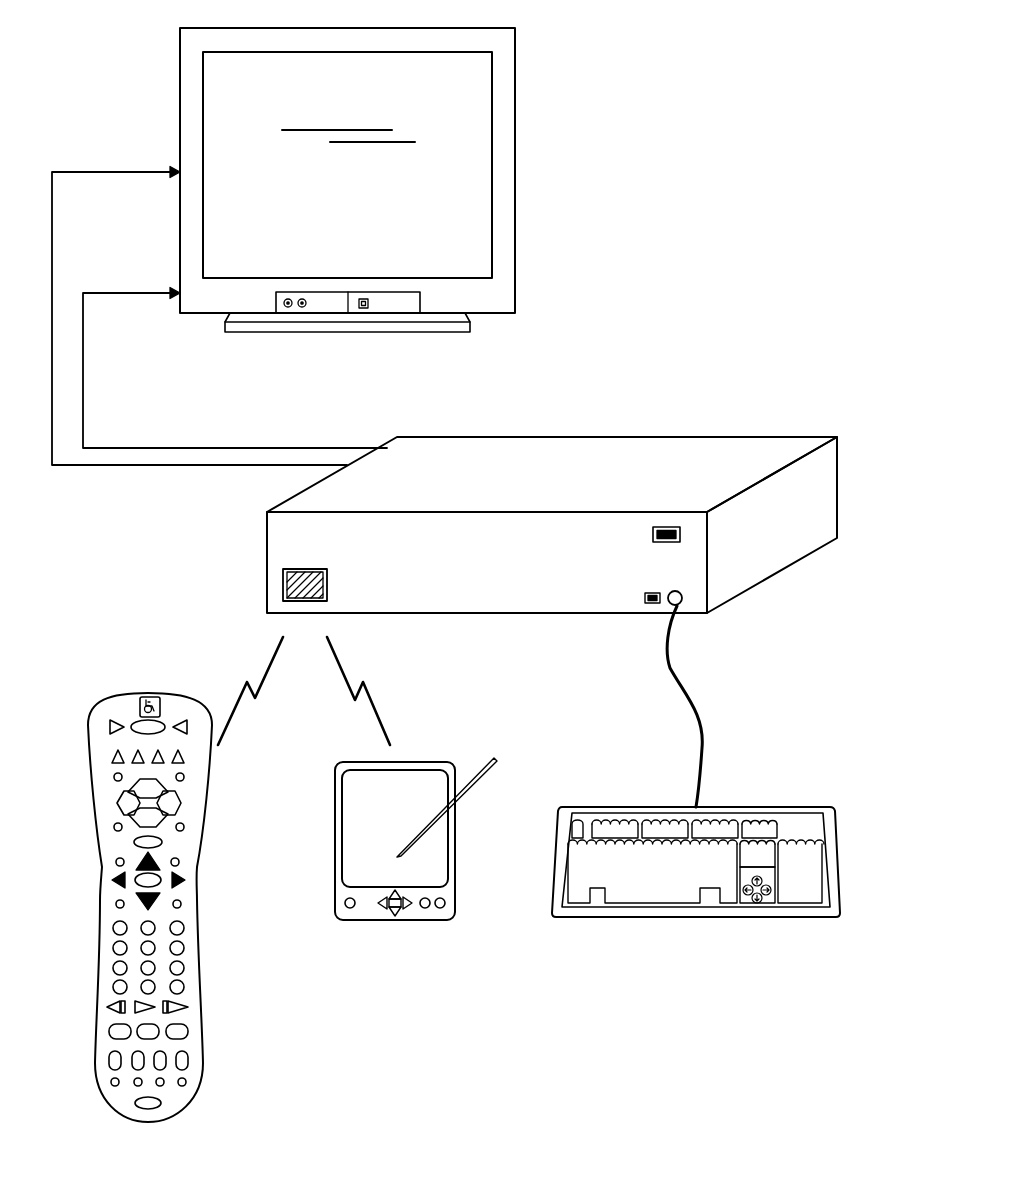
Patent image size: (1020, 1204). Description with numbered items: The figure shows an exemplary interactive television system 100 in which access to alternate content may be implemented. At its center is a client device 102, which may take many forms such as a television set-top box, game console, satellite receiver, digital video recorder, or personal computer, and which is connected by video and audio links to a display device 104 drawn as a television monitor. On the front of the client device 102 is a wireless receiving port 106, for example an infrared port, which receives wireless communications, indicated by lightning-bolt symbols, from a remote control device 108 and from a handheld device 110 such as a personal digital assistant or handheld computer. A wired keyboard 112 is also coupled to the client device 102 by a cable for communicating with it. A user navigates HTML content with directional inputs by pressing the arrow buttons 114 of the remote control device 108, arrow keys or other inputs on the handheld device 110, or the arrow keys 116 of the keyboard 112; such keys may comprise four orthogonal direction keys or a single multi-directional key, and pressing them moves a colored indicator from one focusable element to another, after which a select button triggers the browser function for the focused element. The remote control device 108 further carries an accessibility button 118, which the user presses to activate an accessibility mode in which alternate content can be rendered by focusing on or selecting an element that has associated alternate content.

The interactive television system 100 is at (696, 138).
The client device 102 is at (552, 499).
The display device 104 is at (463, 266).
The wireless receiving port 106 is at (317, 569).
The remote control device 108 is at (177, 887).
The handheld device 110 is at (412, 762).
The keyboard 112 is at (708, 853).
The arrow buttons 114 is at (180, 870).
The arrow keys 116 is at (763, 897).
The accessibility button 118 is at (147, 697).